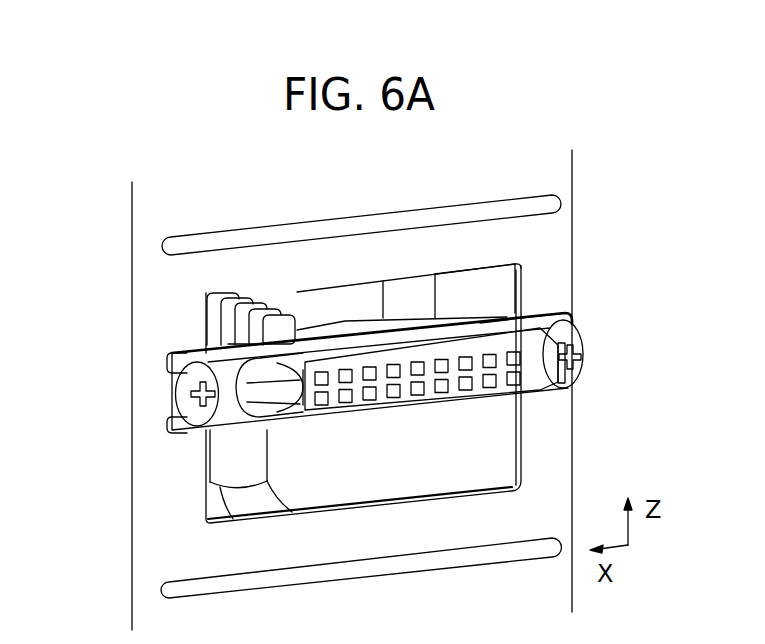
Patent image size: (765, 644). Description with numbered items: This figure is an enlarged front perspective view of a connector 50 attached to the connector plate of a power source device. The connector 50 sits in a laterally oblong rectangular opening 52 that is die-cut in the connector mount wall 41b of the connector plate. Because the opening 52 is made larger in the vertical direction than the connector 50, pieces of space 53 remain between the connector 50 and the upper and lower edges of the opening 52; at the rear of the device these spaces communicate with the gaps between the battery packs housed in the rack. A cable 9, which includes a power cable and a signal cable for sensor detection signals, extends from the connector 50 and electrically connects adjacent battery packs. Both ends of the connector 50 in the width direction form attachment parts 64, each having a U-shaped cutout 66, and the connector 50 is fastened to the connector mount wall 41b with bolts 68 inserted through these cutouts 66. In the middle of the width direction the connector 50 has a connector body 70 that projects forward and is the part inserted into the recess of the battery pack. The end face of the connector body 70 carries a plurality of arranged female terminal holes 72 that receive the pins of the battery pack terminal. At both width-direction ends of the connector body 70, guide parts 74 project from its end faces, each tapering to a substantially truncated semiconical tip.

The connector mount wall 41b is at (172, 286).
The opening 52 is at (335, 290).
The space 53 is at (365, 290).
The cable 9 is at (437, 286).
The connector 50 is at (535, 310).
The attachment part 64 is at (187, 350).
The U-shaped cutout 66 is at (172, 385).
The bolt 68 is at (172, 407).
The guide part 74 is at (293, 410).
The connector body 70 is at (502, 385).
The female terminal hole 72 is at (427, 390).